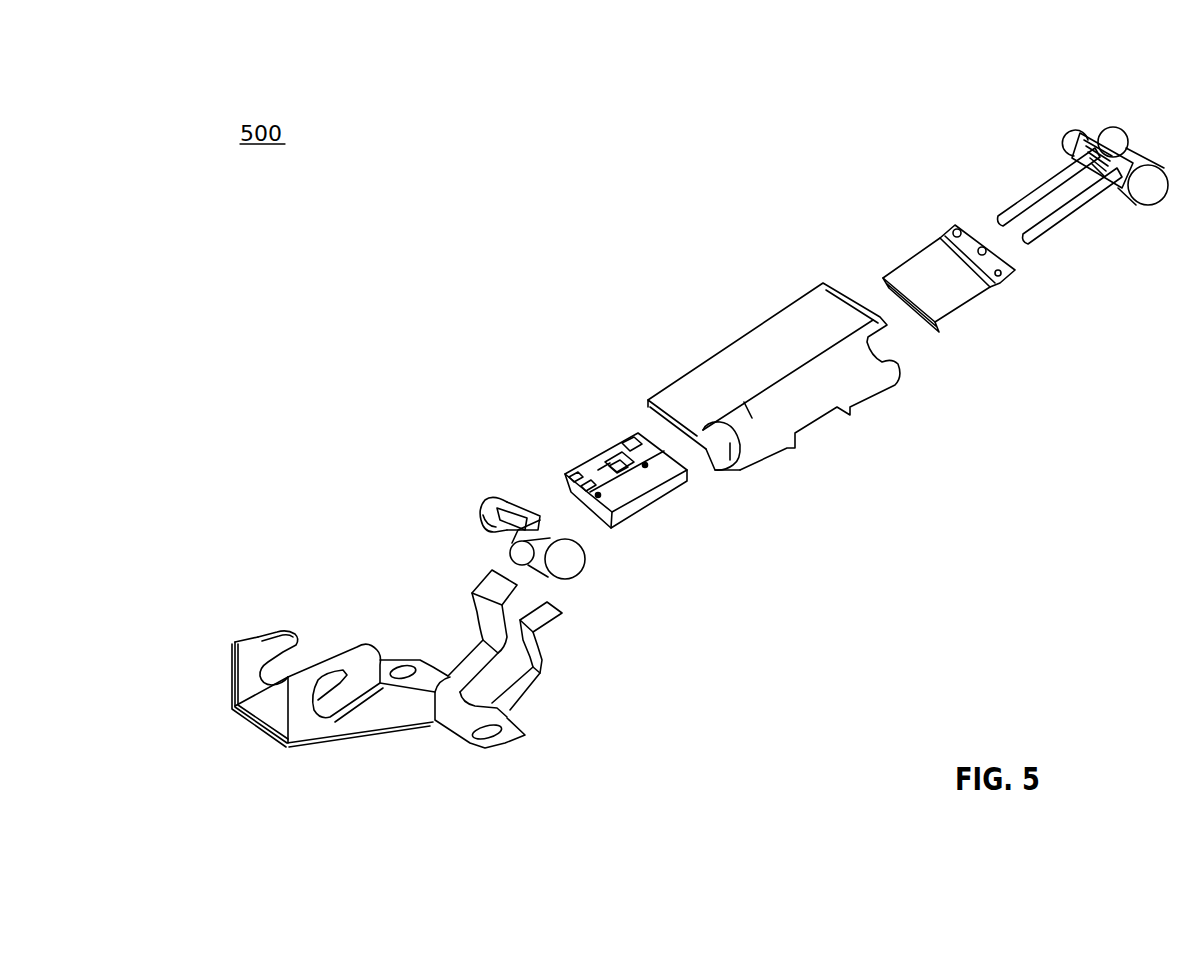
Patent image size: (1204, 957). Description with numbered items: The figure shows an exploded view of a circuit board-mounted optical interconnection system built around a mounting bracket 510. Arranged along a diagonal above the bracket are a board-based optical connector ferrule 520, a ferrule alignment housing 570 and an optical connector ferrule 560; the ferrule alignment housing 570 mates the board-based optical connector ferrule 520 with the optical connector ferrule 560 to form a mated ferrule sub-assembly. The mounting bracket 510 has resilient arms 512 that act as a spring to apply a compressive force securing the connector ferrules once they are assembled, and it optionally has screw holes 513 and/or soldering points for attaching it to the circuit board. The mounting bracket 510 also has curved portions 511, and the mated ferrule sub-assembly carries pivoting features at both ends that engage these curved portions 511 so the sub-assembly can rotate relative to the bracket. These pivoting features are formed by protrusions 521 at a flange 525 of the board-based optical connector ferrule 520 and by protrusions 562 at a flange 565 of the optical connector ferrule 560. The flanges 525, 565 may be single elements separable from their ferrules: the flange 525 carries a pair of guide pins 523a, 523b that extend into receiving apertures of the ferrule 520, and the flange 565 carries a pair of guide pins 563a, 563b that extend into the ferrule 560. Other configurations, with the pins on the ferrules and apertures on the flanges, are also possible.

The mounting bracket 510 is at (378, 742).
The curved portions 511 is at (262, 648).
The resilient arms 512 is at (540, 668).
The screw holes 513 is at (508, 734).
The board-based optical connector ferrule 520 is at (667, 496).
The protrusions 521 is at (490, 499).
The guide pin 523a is at (544, 514).
The guide pin 523b is at (548, 322).
The flange 525 is at (613, 447).
The optical connector ferrule 560 is at (922, 243).
The protrusions 562 is at (1082, 124).
The guide pin 563a is at (1050, 186).
The guide pin 563b is at (1040, 230).
The flange 565 is at (1141, 212).
The ferrule alignment housing 570 is at (721, 344).